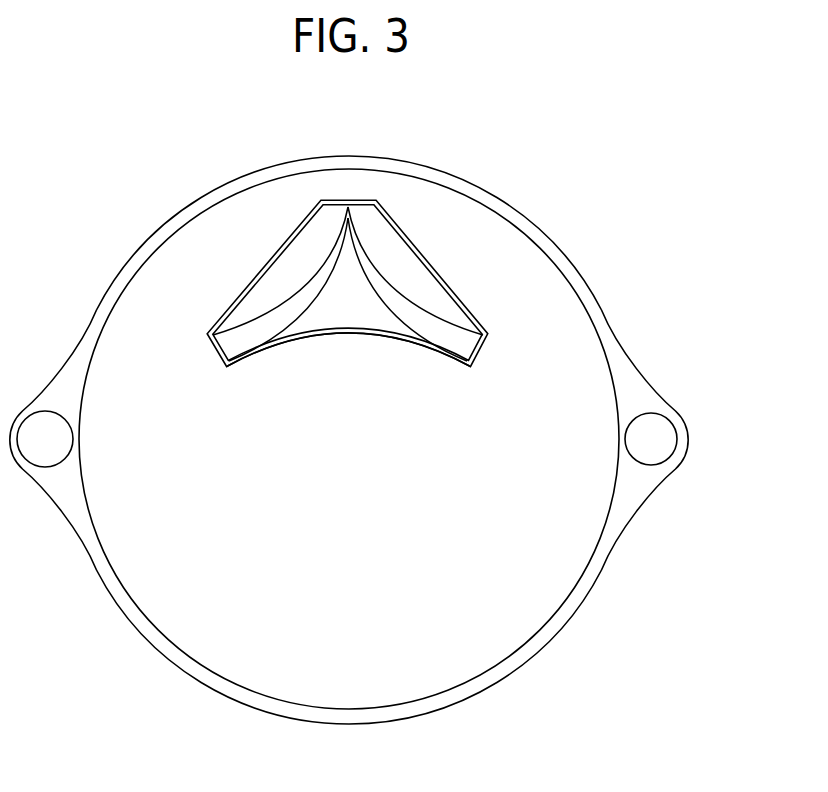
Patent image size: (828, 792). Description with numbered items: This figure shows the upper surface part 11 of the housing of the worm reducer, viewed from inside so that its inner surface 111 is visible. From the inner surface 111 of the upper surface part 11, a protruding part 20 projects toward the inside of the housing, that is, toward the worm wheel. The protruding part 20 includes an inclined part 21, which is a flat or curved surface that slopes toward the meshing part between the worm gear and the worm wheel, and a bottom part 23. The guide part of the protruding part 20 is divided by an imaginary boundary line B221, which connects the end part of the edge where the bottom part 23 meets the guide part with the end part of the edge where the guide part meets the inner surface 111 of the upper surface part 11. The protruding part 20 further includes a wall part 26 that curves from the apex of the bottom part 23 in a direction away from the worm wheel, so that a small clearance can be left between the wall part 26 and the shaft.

The upper surface part 11 is at (634, 295).
The inner surface 111 is at (508, 613).
The protruding part 20 is at (297, 403).
The inclined part 21 is at (318, 200).
The imaginary boundary line B221 is at (423, 307).
The bottom part 23 is at (333, 307).
The wall part 26 is at (348, 334).